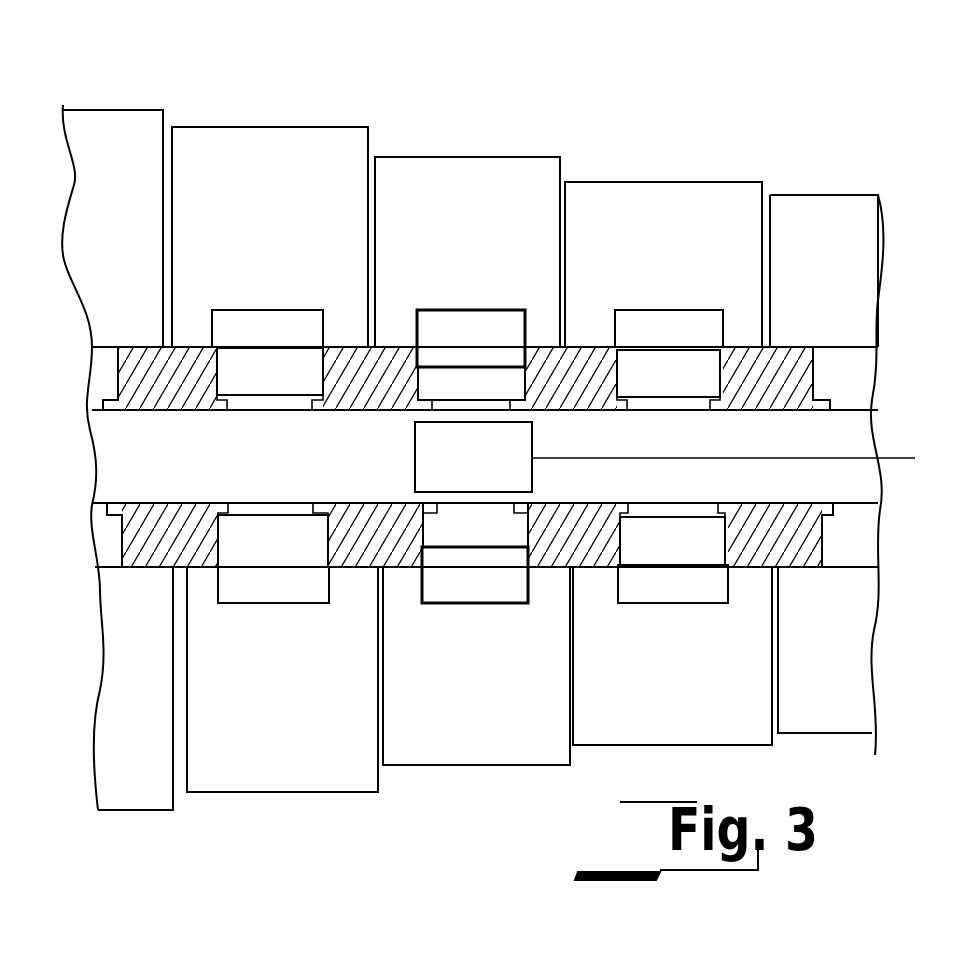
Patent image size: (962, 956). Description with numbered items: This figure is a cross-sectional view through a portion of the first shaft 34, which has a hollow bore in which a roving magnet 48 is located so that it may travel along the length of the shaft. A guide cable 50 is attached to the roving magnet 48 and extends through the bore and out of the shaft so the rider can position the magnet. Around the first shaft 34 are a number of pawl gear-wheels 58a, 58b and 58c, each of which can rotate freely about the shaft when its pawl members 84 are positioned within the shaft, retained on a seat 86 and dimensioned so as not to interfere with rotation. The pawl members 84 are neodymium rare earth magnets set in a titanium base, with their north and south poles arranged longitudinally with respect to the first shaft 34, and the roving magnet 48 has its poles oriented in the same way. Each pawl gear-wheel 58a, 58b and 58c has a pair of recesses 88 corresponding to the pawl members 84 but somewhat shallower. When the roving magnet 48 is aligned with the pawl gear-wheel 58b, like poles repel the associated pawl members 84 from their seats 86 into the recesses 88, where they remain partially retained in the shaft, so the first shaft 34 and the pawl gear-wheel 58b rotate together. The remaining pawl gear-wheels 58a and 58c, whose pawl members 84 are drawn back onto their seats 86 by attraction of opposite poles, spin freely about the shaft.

The pawl gear-wheel 58a is at (311, 125).
The pawl gear-wheel 58b is at (541, 155).
The pawl gear-wheel 58c is at (727, 180).
The first shaft 34 is at (806, 352).
The roving magnet 48 is at (496, 457).
The guide cable 50 is at (803, 458).
The pawl member 84 is at (273, 388).
The seat 86 is at (217, 406).
The recess 88 is at (498, 308).